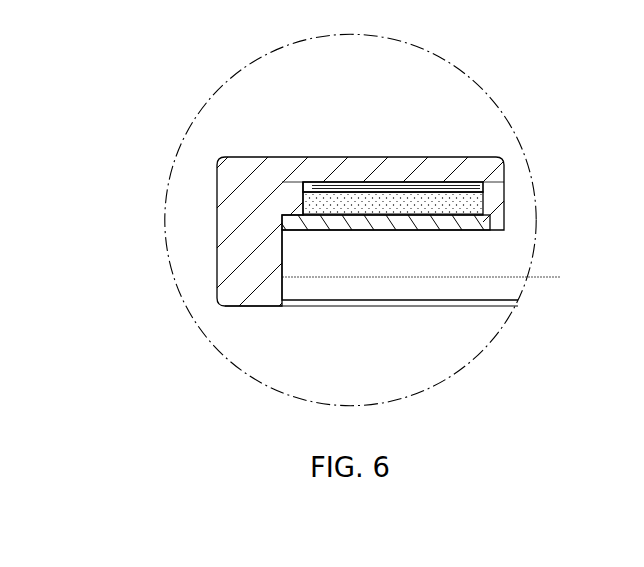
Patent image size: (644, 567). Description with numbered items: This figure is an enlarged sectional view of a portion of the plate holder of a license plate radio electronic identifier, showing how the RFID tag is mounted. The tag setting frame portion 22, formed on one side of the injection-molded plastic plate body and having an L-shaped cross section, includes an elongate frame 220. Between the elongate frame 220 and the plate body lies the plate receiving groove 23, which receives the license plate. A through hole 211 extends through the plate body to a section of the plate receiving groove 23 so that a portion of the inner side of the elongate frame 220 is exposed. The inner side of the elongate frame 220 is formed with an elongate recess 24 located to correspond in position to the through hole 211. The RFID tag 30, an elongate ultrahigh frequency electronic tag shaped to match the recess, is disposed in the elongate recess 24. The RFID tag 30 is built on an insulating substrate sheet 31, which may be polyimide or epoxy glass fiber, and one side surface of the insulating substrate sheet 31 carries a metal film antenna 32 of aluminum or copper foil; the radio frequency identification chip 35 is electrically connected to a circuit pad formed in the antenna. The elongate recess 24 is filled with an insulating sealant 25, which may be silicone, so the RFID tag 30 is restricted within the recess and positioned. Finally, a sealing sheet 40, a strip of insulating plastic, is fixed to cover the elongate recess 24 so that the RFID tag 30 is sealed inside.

The tag setting frame portion 22 is at (205, 203).
The elongate frame 220 is at (357, 163).
The through hole 211 is at (435, 290).
The plate receiving groove 23 is at (310, 262).
The elongate recess 24 is at (483, 205).
The insulating sealant 25 is at (437, 207).
The RFID tag 30 is at (443, 182).
The insulating substrate sheet 31 is at (478, 197).
The metal film antenna 32 is at (405, 183).
The radio frequency identification chip 35 is at (347, 181).
The sealing sheet 40 is at (282, 217).